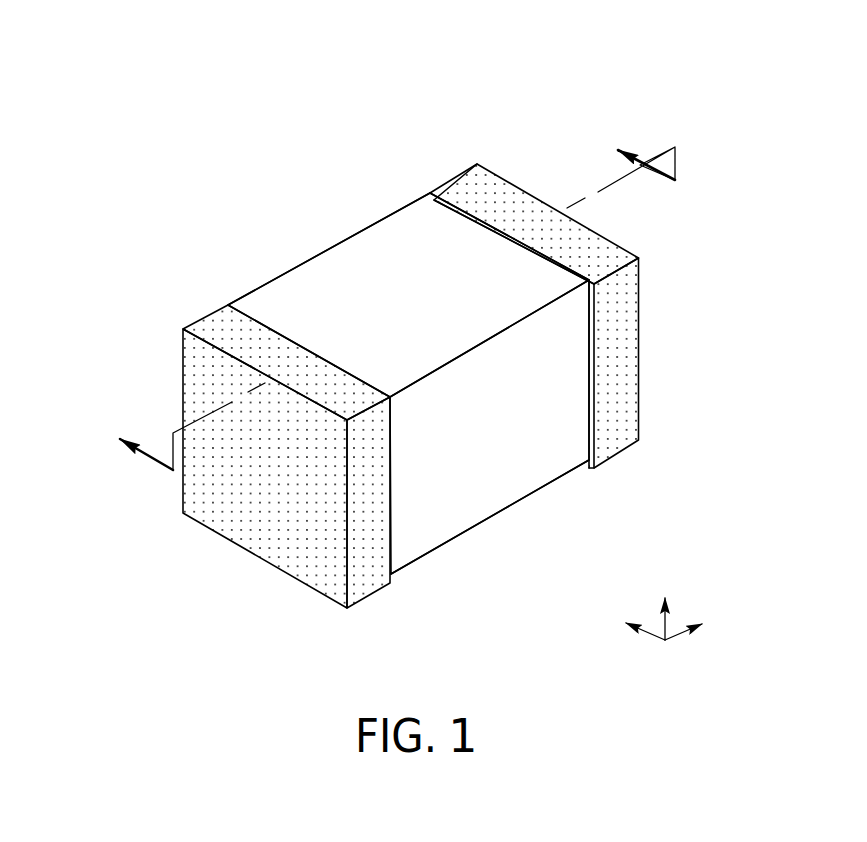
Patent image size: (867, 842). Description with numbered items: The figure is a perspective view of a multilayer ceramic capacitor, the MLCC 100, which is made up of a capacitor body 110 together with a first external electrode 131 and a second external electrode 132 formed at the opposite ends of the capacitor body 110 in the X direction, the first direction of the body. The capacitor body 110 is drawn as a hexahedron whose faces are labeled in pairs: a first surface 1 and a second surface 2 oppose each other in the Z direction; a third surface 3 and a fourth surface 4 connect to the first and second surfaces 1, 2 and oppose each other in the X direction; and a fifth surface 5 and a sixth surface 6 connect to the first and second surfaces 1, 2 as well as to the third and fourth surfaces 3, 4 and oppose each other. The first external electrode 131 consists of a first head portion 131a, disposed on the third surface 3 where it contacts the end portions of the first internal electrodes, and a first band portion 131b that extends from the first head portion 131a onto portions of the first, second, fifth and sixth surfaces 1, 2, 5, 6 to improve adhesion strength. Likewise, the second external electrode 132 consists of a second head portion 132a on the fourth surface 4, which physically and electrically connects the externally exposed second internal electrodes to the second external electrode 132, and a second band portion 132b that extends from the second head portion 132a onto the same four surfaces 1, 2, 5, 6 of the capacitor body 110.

The multilayer ceramic capacitor 100 is at (192, 48).
The capacitor body 110 is at (342, 282).
The first surface 1 is at (442, 516).
The second surface 2 is at (407, 264).
The third surface 3 is at (217, 498).
The fourth surface 4 is at (609, 340).
The fifth surface 5 is at (519, 469).
The sixth surface 6 is at (316, 313).
The first external electrode 131 is at (97, 290).
The first head portion 131a is at (182, 373).
The first band portion 131b is at (213, 328).
The second external electrode 132 is at (405, 110).
The second head portion 132a is at (520, 177).
The second band portion 132b is at (463, 178).